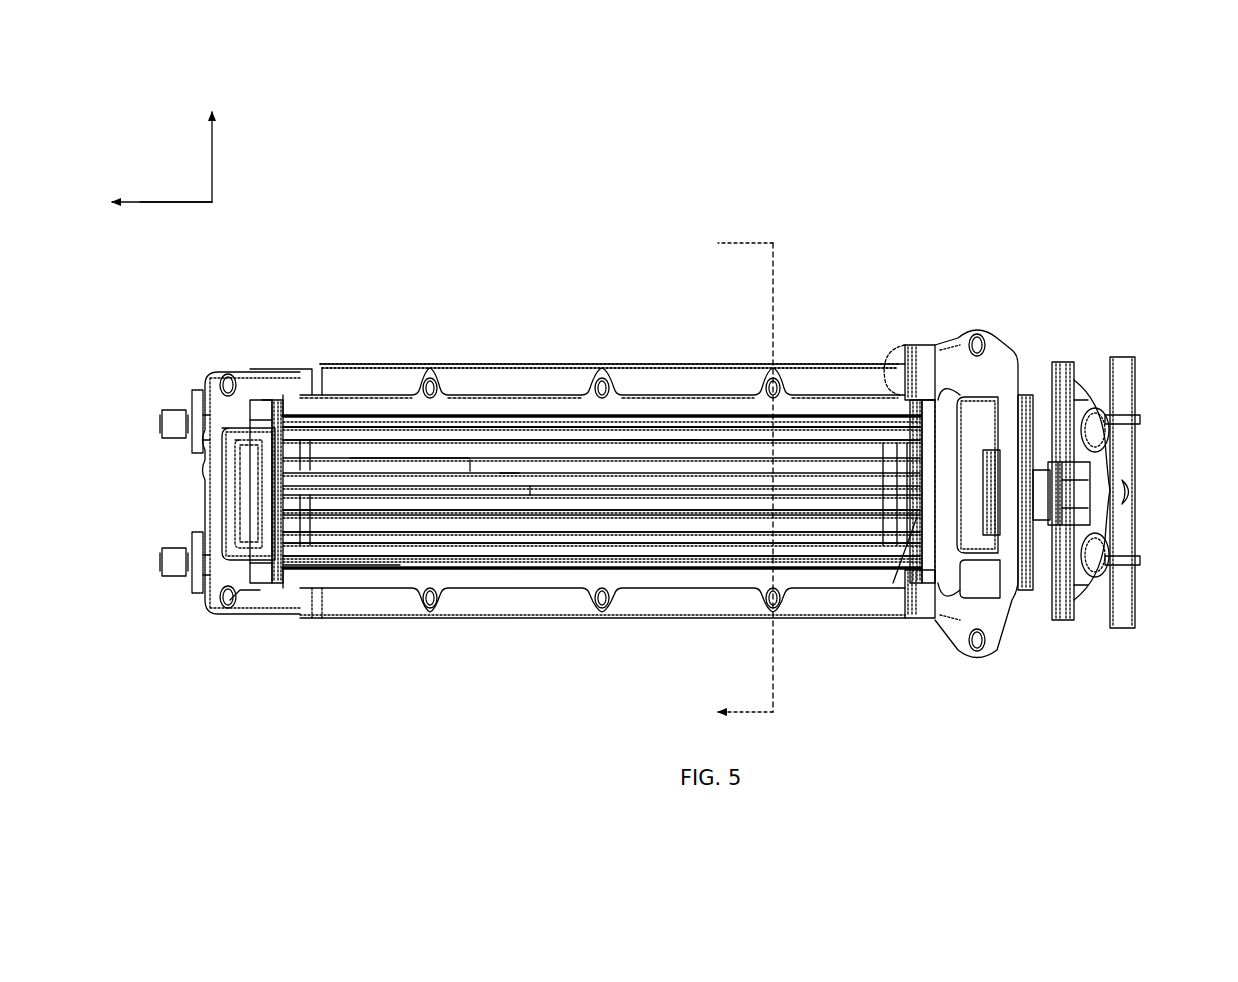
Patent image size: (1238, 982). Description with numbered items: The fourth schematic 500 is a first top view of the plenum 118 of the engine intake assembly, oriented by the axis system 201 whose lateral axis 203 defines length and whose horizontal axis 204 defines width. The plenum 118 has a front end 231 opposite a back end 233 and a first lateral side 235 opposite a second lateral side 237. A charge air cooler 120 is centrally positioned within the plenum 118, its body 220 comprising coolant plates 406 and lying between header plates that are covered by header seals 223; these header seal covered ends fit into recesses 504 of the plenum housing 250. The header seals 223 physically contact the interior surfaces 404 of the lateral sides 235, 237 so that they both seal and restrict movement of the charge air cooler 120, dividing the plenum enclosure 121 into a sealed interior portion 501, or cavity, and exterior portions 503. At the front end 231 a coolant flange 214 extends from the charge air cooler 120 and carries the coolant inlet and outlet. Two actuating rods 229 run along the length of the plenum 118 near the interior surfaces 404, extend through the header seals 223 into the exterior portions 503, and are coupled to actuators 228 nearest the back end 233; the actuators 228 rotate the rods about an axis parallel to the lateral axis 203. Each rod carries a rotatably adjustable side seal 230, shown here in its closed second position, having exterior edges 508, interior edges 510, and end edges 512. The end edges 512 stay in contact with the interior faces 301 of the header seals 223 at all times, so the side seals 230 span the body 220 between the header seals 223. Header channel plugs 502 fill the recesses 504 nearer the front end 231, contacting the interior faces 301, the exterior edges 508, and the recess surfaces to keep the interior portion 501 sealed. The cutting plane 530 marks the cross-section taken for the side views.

The plenum 118 is at (1022, 272).
The charge air cooler 120 is at (558, 437).
The plenum enclosure 121 is at (1008, 580).
The axis system 201 is at (182, 218).
The lateral axis 203 is at (198, 200).
The horizontal axis 204 is at (215, 158).
The coolant flange 214 is at (972, 482).
The body 220 is at (601, 492).
The header seals 223 is at (279, 400).
The actuators 228 is at (176, 410).
The actuating rods 229 is at (478, 425).
The rotatably adjustable side seals 230 is at (673, 437).
The front end 231 is at (1148, 492).
The back end 233 is at (128, 505).
The first lateral side 235 is at (653, 310).
The second lateral side 237 is at (620, 656).
The plenum housing 250 is at (380, 622).
The interior faces 301 is at (893, 585).
The interior surfaces 404 is at (373, 570).
The coolant plates 406 is at (540, 513).
The fourth schematic 500 is at (1142, 237).
The interior portion 501 is at (332, 408).
The header channel plugs 502 is at (912, 345).
The exterior portions 503 is at (235, 472).
The recesses 504 is at (247, 378).
The exterior edges 508 is at (325, 563).
The interior edges 510 is at (302, 540).
The end edges 512 is at (278, 585).
The cutting plane 530 is at (775, 262).